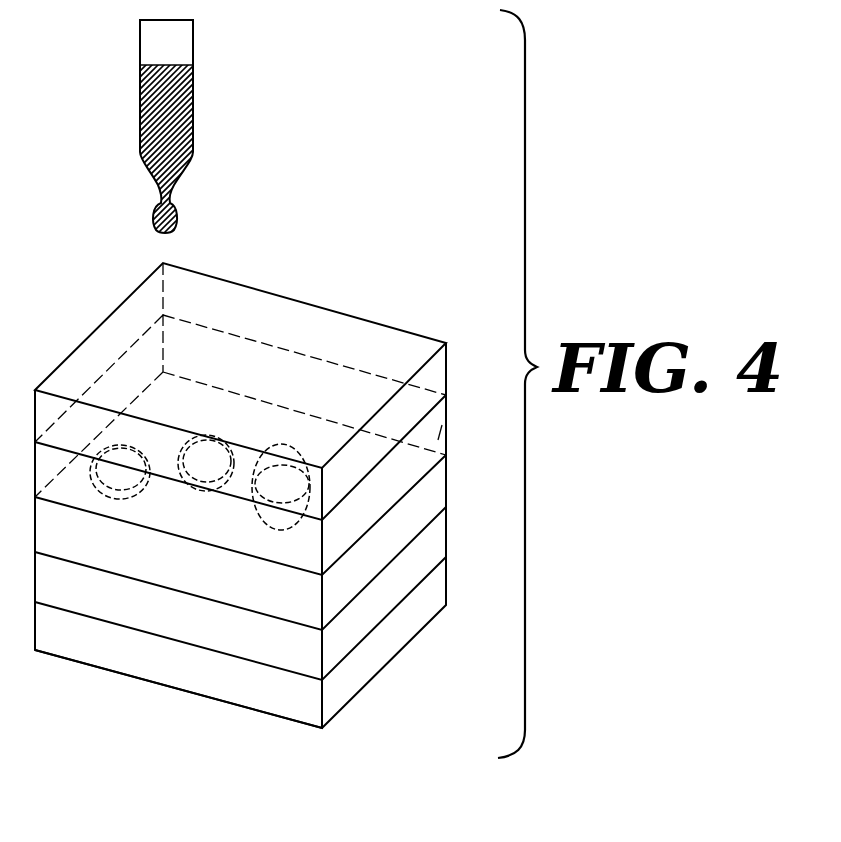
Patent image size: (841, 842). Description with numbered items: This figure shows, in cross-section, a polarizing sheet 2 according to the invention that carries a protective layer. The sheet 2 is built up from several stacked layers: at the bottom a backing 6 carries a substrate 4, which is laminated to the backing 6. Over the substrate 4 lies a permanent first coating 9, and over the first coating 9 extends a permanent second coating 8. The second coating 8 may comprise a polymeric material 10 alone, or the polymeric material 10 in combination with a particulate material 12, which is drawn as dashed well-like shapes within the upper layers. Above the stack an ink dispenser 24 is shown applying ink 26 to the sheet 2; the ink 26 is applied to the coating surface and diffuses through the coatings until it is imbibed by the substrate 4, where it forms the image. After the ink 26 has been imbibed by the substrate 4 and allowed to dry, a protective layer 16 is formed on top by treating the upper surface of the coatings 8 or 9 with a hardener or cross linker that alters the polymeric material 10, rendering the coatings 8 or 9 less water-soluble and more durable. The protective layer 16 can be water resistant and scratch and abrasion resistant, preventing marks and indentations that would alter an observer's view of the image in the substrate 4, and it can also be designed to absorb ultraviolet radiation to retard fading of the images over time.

The sheet 2 is at (300, 328).
The substrate 4 is at (447, 538).
The backing 6 is at (447, 587).
The second coating 8 is at (447, 440).
The first coating 9 is at (447, 490).
The polymeric material 10 is at (448, 440).
The particulate material 12 is at (112, 447).
The protective layer 16 is at (447, 362).
The ink dispenser 24 is at (150, 45).
The ink 26 is at (155, 117).